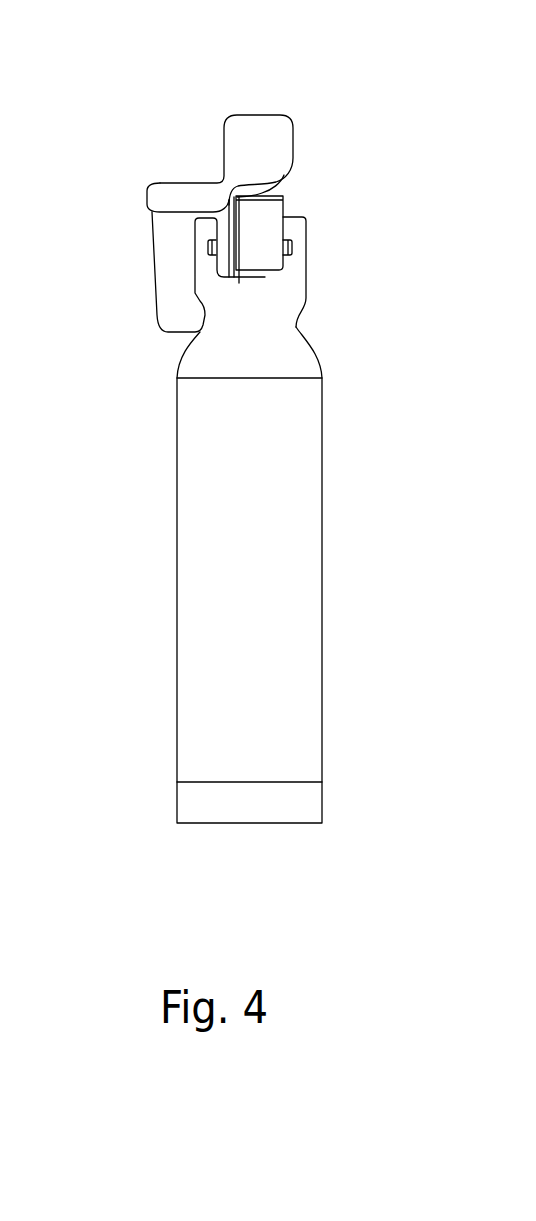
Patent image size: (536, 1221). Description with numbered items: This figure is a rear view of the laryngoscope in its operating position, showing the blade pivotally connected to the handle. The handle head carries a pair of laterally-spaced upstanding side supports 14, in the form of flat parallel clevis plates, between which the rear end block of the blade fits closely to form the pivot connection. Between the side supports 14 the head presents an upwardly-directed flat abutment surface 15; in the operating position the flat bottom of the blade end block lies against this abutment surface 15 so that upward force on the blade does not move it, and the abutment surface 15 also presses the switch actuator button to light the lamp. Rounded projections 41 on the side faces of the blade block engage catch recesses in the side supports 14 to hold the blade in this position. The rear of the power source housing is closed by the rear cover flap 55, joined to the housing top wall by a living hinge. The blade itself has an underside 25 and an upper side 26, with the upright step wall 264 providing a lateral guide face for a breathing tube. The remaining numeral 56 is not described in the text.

The upper side 26 is at (198, 111).
The step wall 264 is at (226, 154).
The lever neck portion 56 is at (270, 198).
The abutment surface 15 is at (242, 277).
The rear cover flap 55 is at (258, 250).
The side supports 14 is at (307, 231).
The projections 41 is at (293, 245).
The underside 25 is at (169, 278).